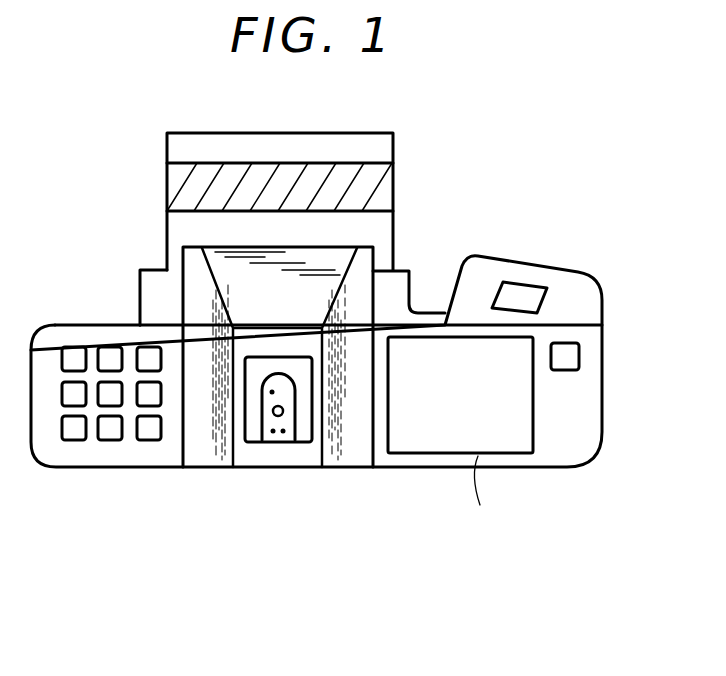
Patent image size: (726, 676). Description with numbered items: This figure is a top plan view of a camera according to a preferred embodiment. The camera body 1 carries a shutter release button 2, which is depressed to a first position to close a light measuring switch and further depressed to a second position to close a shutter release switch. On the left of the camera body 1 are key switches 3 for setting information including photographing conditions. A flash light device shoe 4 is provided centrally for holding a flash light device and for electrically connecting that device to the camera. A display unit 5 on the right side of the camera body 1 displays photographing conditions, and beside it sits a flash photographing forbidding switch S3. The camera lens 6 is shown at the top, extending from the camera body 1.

The camera body 1 is at (350, 470).
The shutter release button 2 is at (516, 292).
The key switches 3 is at (73, 352).
The flash light device shoe 4 is at (268, 448).
The display unit 5 is at (460, 440).
The camera lens 6 is at (352, 133).
The flash photographing forbidding switch S3 is at (580, 357).